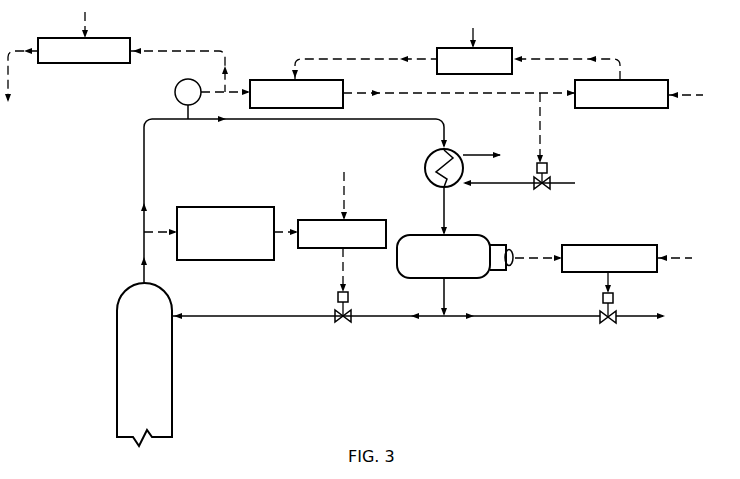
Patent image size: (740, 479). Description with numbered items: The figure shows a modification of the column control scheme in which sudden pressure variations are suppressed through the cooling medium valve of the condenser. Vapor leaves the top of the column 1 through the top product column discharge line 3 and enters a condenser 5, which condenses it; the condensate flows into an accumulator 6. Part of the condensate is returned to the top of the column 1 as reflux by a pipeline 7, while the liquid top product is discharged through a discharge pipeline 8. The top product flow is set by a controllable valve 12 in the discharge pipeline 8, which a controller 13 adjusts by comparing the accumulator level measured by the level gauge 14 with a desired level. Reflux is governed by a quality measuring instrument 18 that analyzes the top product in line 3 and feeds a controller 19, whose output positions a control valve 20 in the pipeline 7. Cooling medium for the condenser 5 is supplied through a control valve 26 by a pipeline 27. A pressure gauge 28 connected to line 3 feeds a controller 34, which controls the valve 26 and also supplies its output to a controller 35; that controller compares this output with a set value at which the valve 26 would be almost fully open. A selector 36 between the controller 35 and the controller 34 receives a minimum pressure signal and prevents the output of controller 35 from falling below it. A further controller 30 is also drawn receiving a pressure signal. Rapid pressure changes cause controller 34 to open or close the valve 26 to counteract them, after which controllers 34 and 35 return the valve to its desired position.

The column 1 is at (149, 375).
The top product column discharge line 3 is at (147, 170).
The condenser 5 is at (426, 157).
The accumulator 6 is at (455, 235).
The pipeline 7 is at (385, 315).
The discharge pipeline 8 is at (628, 315).
The controllable valve 12 is at (609, 324).
The controller 13 is at (628, 245).
The level gauge 14 is at (513, 250).
The quality measuring instrument 18 is at (227, 207).
The controller 19 is at (352, 220).
The control valve 20 is at (344, 323).
The control valve 26 is at (545, 190).
The pipeline 27 is at (516, 186).
The pressure gauge 28 is at (182, 85).
The controller 30 is at (96, 38).
The controller 34 is at (278, 78).
The controller 35 is at (640, 80).
The selector 36 is at (490, 48).